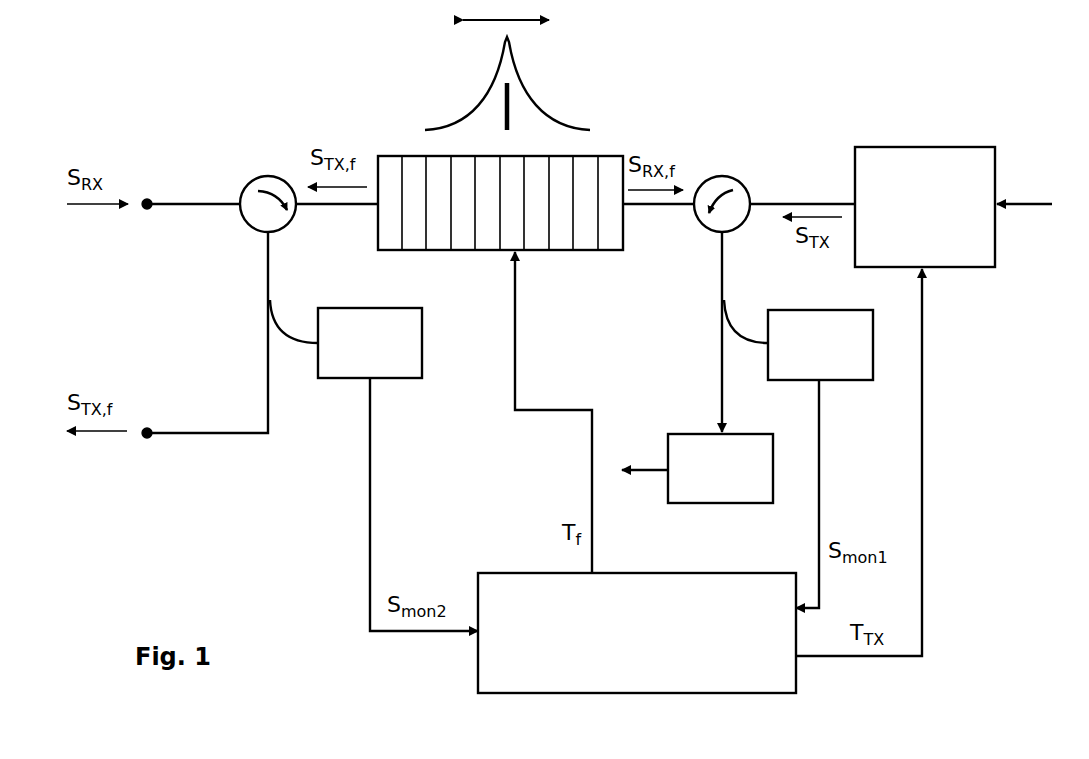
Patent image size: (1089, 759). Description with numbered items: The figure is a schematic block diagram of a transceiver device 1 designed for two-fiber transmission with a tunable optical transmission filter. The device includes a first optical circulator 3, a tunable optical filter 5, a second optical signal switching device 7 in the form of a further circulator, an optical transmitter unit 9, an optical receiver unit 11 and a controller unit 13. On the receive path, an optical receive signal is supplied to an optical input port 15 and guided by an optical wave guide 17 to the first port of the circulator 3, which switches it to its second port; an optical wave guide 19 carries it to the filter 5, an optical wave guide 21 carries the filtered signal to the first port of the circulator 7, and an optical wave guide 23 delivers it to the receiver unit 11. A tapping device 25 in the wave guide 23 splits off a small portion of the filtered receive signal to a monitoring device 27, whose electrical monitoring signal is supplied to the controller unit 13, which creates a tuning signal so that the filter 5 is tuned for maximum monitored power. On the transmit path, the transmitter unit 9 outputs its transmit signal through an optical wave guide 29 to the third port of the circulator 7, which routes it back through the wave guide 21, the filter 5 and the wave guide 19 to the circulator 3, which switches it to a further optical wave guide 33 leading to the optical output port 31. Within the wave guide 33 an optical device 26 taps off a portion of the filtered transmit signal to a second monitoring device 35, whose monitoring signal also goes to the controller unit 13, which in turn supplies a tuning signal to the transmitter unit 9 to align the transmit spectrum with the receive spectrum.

The transceiver device 1 is at (737, 78).
The optical circulator 3 is at (277, 180).
The tunable optical filter 5 is at (488, 242).
The second optical signal switching device 7 is at (723, 182).
The optical transmitter unit 9 is at (977, 167).
The optical receiver unit 11 is at (682, 442).
The controller unit 13 is at (663, 587).
The optical input port 15 is at (148, 199).
The optical wave guide 17 is at (202, 205).
The optical wave guide 19 is at (340, 208).
The optical wave guide 21 is at (662, 208).
The optical wave guide 23 is at (718, 343).
The tapping device 25 is at (735, 300).
The optical device 26 is at (280, 311).
The monitoring device 27 is at (857, 368).
The optical wave guide 29 is at (800, 205).
The optical output port 31 is at (146, 438).
The optical wave guide 33 is at (267, 377).
The second monitoring device 35 is at (403, 369).